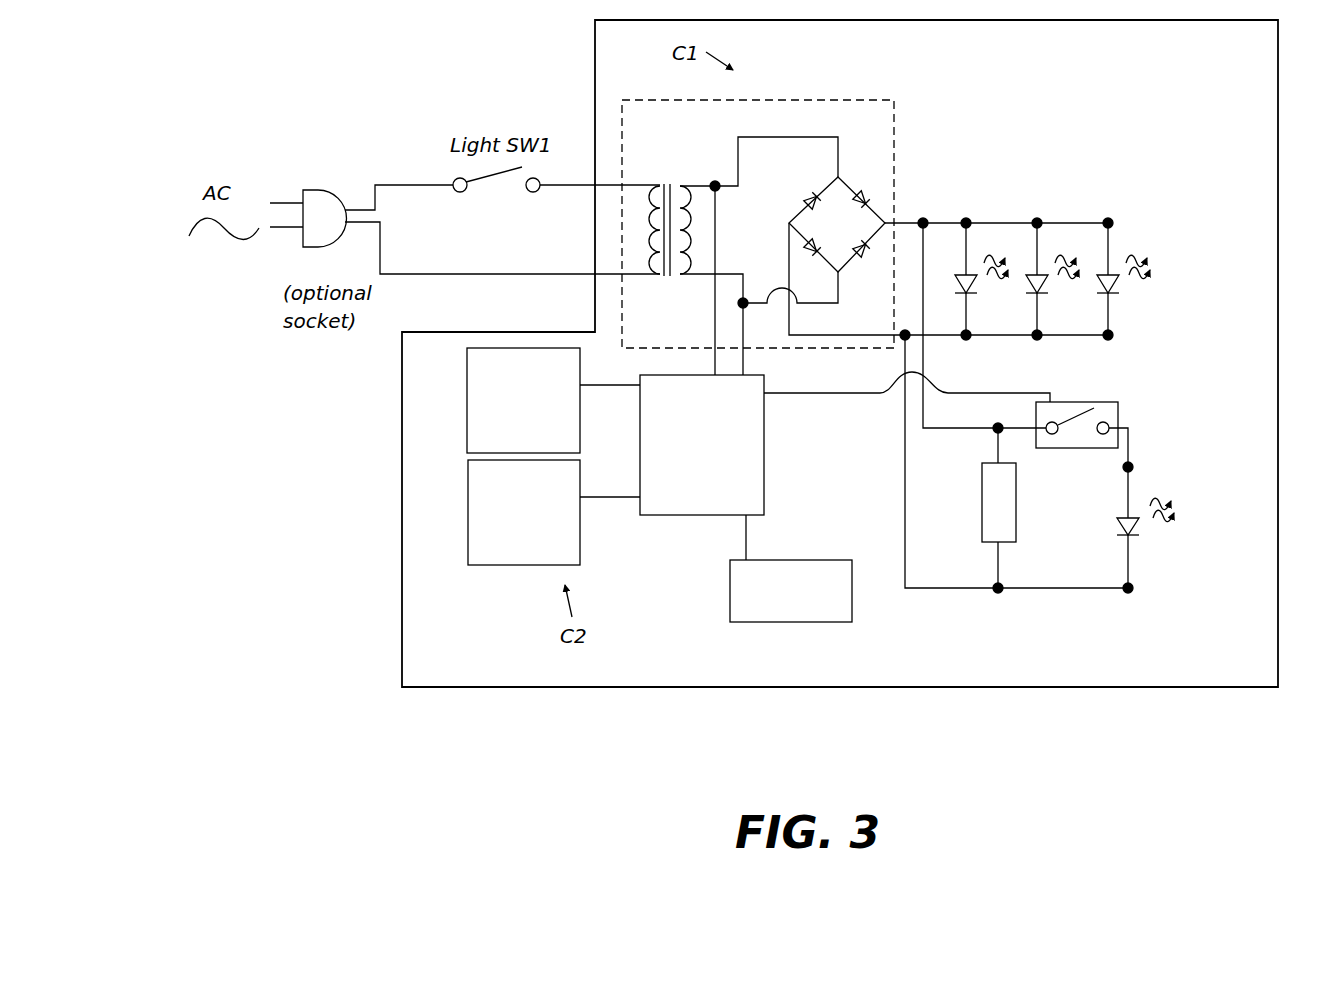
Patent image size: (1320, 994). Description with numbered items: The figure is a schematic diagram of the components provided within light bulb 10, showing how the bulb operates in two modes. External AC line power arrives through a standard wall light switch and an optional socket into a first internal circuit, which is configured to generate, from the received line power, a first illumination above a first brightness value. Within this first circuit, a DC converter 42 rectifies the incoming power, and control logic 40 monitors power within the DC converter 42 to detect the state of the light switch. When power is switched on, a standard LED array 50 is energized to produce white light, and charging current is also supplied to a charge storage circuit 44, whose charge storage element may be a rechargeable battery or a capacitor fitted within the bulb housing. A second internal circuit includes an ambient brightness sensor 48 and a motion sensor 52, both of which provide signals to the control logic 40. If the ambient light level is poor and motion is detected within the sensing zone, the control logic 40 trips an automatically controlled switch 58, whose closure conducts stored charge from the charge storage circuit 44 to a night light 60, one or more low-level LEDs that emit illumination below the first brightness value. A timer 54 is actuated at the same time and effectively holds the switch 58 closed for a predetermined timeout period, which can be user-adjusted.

The light bulb 10 is at (402, 623).
The control logic 40 is at (743, 502).
The DC converter 42 is at (666, 161).
The charge storage circuit 44 is at (1014, 511).
The ambient brightness sensor 48 is at (468, 525).
The LED array 50 is at (1100, 211).
The motion sensor 52 is at (467, 408).
The timer 54 is at (846, 590).
The automatically controlled switch 58 is at (1120, 407).
The night light 60 is at (1098, 514).